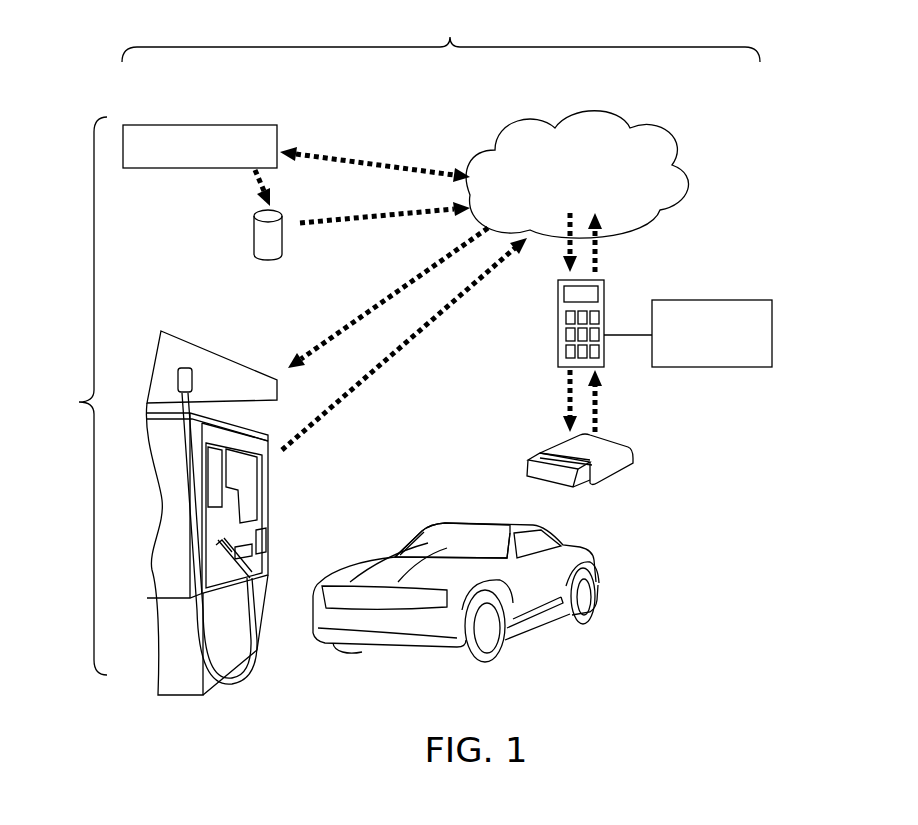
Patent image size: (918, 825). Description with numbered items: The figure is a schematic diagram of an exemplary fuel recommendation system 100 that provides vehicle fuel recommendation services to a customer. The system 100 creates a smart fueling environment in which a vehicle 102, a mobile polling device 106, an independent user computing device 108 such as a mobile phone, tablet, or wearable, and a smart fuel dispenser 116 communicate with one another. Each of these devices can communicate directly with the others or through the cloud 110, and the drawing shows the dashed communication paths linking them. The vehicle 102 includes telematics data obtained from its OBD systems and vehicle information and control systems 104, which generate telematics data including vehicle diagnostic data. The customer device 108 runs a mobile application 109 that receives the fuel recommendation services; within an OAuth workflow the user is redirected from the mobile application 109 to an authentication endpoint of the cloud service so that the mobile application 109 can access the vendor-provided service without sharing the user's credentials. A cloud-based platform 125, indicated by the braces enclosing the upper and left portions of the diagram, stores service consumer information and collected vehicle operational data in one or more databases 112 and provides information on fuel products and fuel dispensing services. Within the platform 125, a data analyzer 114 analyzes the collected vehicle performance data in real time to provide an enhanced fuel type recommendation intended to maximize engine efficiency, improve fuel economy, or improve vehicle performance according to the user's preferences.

The fuel recommendation system 100 is at (736, 147).
The vehicle 102 is at (600, 558).
The vehicle information and control systems 104 is at (425, 550).
The mobile polling device 106 is at (635, 460).
The independent user computing device 108 is at (604, 283).
The mobile application 109 is at (719, 367).
The cloud 110 is at (643, 138).
The databases 112 is at (262, 245).
The data analyzer 114 is at (247, 125).
The smart fuel dispenser 116 is at (218, 353).
The cloud-based platform 125 is at (72, 402).